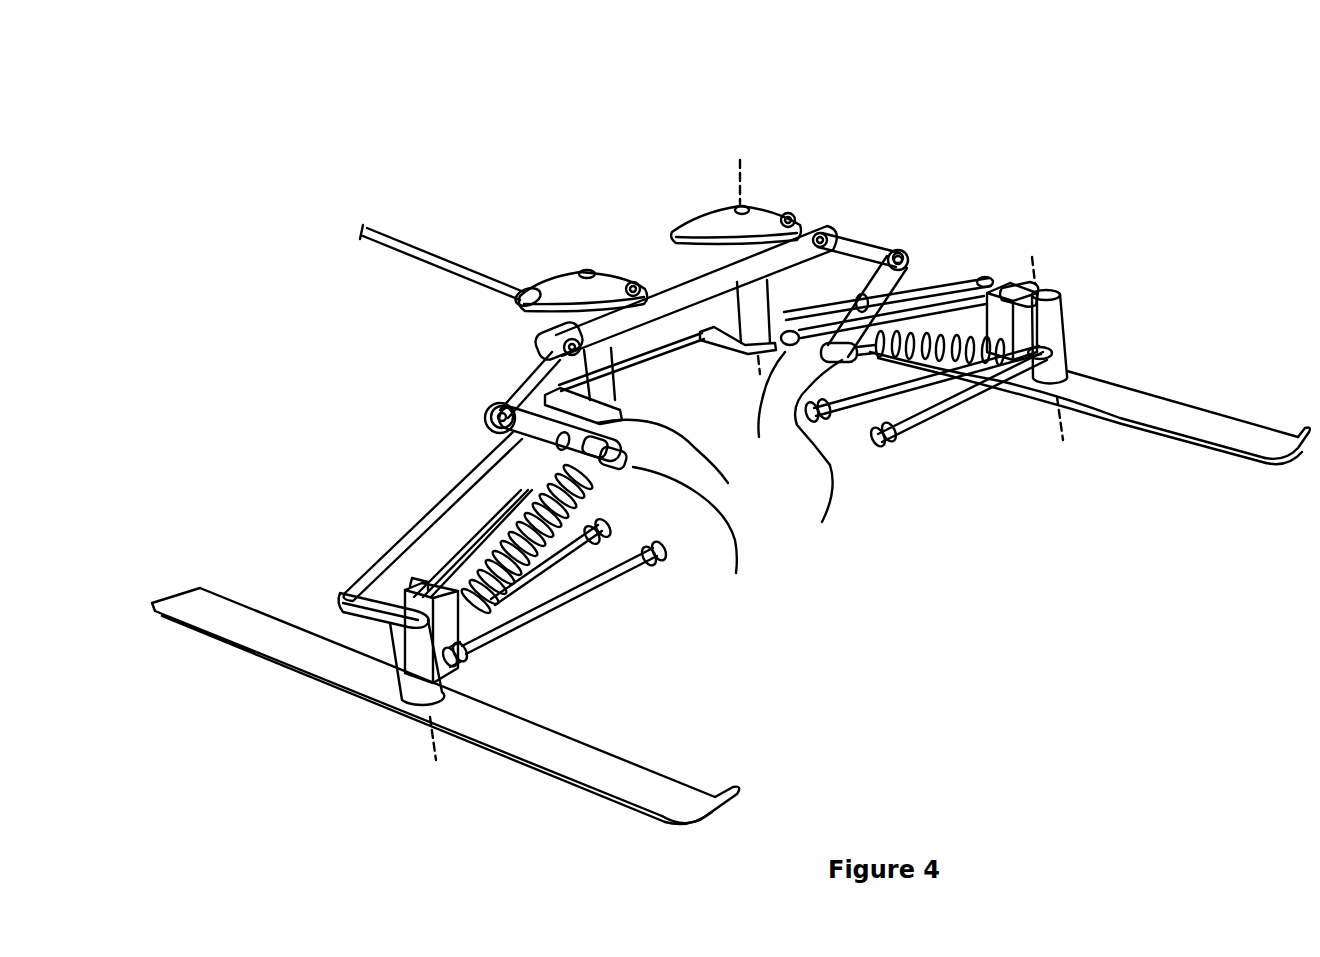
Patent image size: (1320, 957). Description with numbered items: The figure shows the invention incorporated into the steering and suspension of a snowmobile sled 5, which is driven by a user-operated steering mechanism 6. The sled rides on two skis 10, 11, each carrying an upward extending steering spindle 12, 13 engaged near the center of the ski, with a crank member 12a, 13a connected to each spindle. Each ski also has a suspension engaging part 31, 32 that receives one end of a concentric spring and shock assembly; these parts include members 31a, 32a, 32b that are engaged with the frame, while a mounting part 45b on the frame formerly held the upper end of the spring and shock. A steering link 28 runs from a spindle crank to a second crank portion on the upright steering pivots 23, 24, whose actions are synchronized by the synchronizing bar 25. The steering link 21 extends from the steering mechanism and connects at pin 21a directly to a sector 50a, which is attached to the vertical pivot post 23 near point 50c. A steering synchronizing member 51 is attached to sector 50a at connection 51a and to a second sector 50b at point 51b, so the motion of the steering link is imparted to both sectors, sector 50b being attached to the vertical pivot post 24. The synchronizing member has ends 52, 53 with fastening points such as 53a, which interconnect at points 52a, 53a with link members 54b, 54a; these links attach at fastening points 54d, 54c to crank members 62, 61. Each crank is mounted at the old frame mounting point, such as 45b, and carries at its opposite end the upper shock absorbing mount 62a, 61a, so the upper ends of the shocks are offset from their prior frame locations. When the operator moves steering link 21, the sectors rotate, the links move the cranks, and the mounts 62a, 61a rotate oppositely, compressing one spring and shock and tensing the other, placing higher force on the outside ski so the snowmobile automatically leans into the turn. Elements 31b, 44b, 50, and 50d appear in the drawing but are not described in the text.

The sled 5 is at (985, 112).
The steering mechanism 6 is at (352, 212).
The ski 10 is at (563, 805).
The ski 11 is at (1192, 397).
The steering spindle 12 is at (417, 670).
The crank member 12a is at (373, 610).
The steering spindle 13 is at (1065, 327).
The crank member 13a is at (1038, 292).
The steering link 21 is at (425, 250).
The pin 21a is at (513, 305).
The steering pivot 23 is at (608, 386).
The steering pivot 24 is at (757, 297).
The synchronizing bar 25 is at (650, 348).
The steering link 28 is at (440, 508).
The suspension engaging part 31 is at (432, 630).
The member 31a is at (588, 605).
The first bracket second rod 31b is at (580, 550).
The suspension engaging part 32 is at (1019, 321).
The member 32a is at (955, 402).
The member 32b is at (862, 393).
The guide rail 44b is at (903, 285).
The mounting part 45b is at (541, 460).
The steering plate assembly 50 is at (648, 135).
The sector 50a is at (580, 270).
The sector 50b is at (720, 218).
The point 50c is at (584, 262).
The second plate fastener 50d is at (745, 207).
The steering synchronizing member 51 is at (696, 291).
The connection 51a is at (632, 281).
The point 51b is at (795, 218).
The end 52 is at (530, 337).
The point 52a is at (543, 342).
The end 53 is at (843, 226).
The fastening point 53a is at (905, 228).
The link member 54a is at (912, 240).
The link member 54b is at (488, 402).
The fastening point 54c is at (908, 262).
The fastening point 54d is at (495, 430).
The crank member 61 is at (768, 412).
The upper shock absorbing mount 61a is at (831, 457).
The crank member 62 is at (681, 461).
The upper shock absorbing mount 62a is at (713, 537).